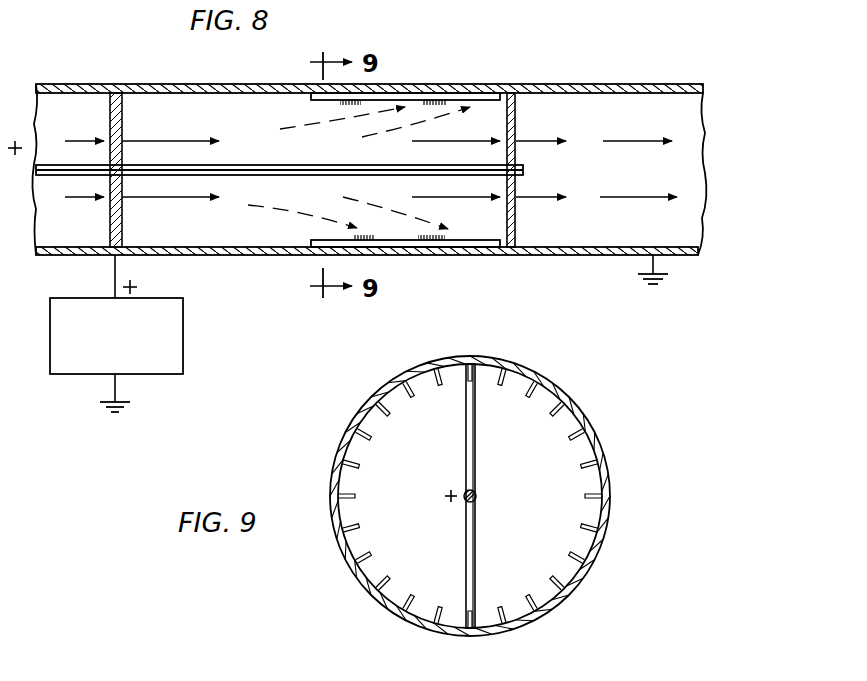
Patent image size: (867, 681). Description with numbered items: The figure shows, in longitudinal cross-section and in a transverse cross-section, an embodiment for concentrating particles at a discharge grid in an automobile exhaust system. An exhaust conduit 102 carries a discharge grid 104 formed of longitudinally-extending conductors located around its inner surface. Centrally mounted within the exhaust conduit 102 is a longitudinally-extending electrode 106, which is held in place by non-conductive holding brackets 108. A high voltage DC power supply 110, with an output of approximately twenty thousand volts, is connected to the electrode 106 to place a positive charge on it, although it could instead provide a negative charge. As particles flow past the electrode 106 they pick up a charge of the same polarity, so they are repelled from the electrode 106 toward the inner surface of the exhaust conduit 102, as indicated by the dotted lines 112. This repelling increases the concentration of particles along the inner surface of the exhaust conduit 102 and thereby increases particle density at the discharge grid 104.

In FIG. 8, the exhaust conduit 102 is at (580, 91).
In FIG. 9, the exhaust conduit 102 is at (597, 449).
In FIG. 8, the discharge grid 104 is at (482, 93).
In FIG. 9, the discharge grid 104 is at (340, 448).
In FIG. 8, the electrode 106 is at (221, 166).
In FIG. 9, the electrode 106 is at (477, 496).
In FIG. 8, the holding brackets 108 is at (111, 108).
In FIG. 9, the holding brackets 108 is at (476, 459).
In FIG. 8, the power supply 110 is at (183, 335).
In FIG. 8, the dotted lines 112 is at (288, 213).